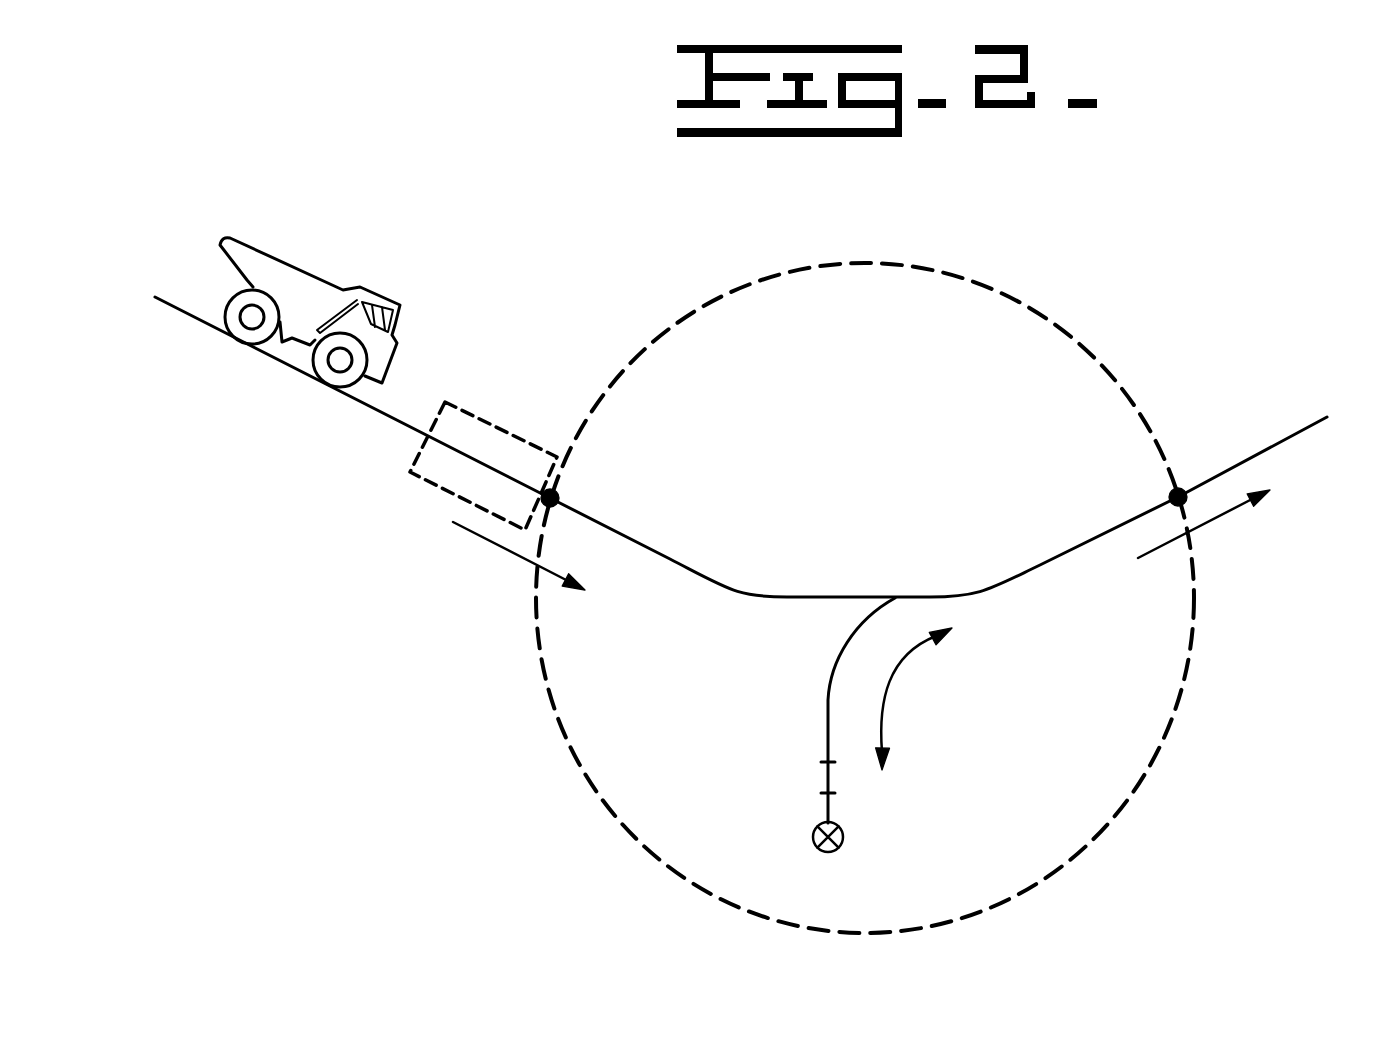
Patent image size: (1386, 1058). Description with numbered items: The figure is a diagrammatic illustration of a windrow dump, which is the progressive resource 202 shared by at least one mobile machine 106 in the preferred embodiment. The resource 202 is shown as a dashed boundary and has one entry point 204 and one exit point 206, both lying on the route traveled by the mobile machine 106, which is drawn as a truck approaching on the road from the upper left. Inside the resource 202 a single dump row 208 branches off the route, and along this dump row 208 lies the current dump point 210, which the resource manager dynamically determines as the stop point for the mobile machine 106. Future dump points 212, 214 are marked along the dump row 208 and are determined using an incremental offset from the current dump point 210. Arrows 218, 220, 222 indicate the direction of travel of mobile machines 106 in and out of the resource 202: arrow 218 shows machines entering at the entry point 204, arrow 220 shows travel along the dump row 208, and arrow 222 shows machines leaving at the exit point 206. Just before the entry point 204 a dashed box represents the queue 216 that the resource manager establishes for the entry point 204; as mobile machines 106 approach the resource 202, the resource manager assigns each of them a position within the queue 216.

The mobile machine 106 is at (322, 272).
The resource 202 is at (1008, 298).
The entry point 204 is at (560, 493).
The exit point 206 is at (1185, 488).
The dump row 208 is at (835, 682).
The dump point 210 is at (842, 848).
The future dump point 212 is at (827, 793).
The future dump point 214 is at (827, 762).
The queue 216 is at (488, 425).
The arrow 218 is at (493, 542).
The arrow 220 is at (898, 668).
The arrow 222 is at (1228, 512).